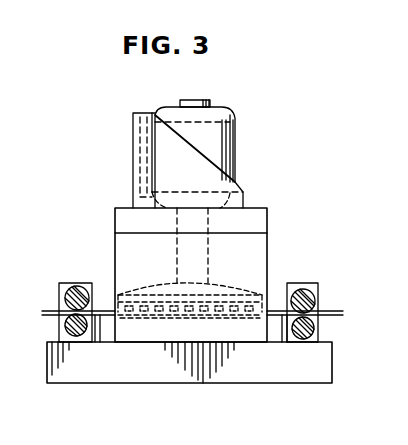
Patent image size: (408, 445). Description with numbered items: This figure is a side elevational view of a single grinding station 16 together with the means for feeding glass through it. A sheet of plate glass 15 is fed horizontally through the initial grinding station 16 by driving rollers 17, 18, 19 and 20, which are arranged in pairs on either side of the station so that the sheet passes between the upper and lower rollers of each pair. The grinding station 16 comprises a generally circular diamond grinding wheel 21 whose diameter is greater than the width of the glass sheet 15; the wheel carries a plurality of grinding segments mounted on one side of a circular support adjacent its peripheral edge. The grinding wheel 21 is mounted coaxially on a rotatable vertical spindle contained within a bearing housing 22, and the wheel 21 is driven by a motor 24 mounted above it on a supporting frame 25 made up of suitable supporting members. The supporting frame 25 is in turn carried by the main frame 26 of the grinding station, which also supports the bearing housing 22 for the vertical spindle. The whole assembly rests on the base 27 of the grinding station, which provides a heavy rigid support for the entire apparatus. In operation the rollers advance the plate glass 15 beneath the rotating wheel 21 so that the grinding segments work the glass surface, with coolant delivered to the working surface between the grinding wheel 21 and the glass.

The sheet of plate glass 15 is at (47, 309).
The initial grinding station 16 is at (277, 170).
The driving roller 17 is at (317, 293).
The driving roller 18 is at (296, 322).
The driving roller 19 is at (77, 287).
The driving roller 20 is at (65, 322).
The diamond grinding wheel 21 is at (222, 283).
The bearing housing 22 is at (175, 256).
The motor 24 is at (230, 118).
The supporting frame 25 is at (133, 148).
The main frame 26 is at (253, 213).
The base 27 is at (232, 380).